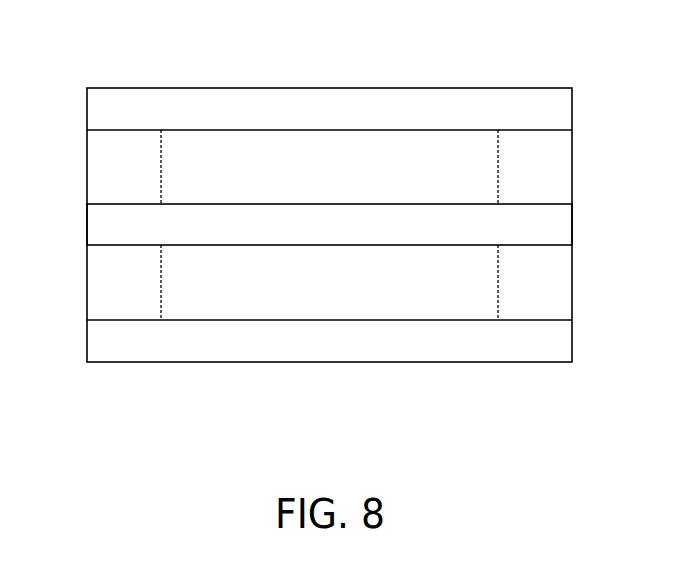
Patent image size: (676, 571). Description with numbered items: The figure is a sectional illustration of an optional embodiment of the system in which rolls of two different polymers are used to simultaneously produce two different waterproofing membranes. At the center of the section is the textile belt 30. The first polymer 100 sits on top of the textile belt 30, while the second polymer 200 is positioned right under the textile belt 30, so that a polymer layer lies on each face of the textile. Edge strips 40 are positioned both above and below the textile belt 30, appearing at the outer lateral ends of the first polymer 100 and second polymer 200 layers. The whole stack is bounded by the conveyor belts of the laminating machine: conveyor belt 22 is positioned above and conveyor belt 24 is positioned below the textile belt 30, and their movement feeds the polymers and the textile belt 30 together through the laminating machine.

The conveyor belt 22 is at (395, 105).
The conveyor belt 24 is at (433, 345).
The textile belt 30 is at (257, 217).
The edge strips 40 is at (98, 167).
The first polymer 100 is at (205, 148).
The second polymer 200 is at (252, 310).